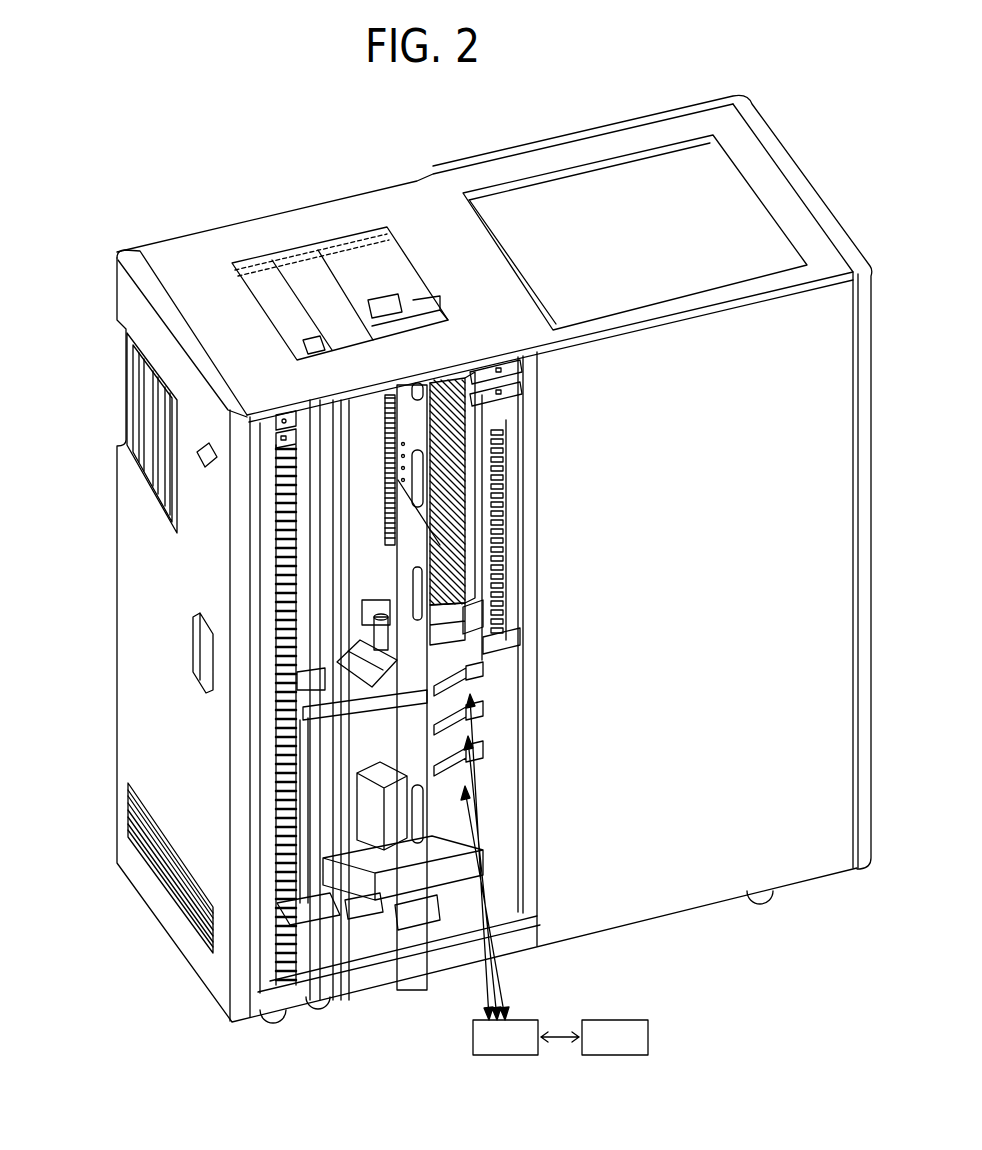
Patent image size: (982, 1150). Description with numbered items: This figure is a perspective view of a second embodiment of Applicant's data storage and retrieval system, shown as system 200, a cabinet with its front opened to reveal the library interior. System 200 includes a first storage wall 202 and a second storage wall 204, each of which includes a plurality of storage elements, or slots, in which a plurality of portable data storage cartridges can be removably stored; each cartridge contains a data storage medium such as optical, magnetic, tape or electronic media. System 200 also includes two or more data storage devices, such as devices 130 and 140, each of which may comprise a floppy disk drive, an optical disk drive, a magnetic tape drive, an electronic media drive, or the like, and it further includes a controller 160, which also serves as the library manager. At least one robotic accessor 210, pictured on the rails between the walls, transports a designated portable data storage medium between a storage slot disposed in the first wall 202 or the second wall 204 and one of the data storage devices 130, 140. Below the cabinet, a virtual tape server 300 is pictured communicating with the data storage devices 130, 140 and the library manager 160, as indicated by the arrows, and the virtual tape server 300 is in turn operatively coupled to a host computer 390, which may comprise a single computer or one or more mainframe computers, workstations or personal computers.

The data storage and retrieval system 200 is at (306, 1018).
The first storage wall 202 is at (478, 466).
The second storage wall 204 is at (272, 543).
The robotic accessor 210 is at (302, 688).
The controller 160 is at (466, 672).
The data storage device 130 is at (466, 712).
The data storage device 140 is at (466, 750).
The virtual tape server 300 is at (523, 1051).
The host computer 390 is at (633, 1051).